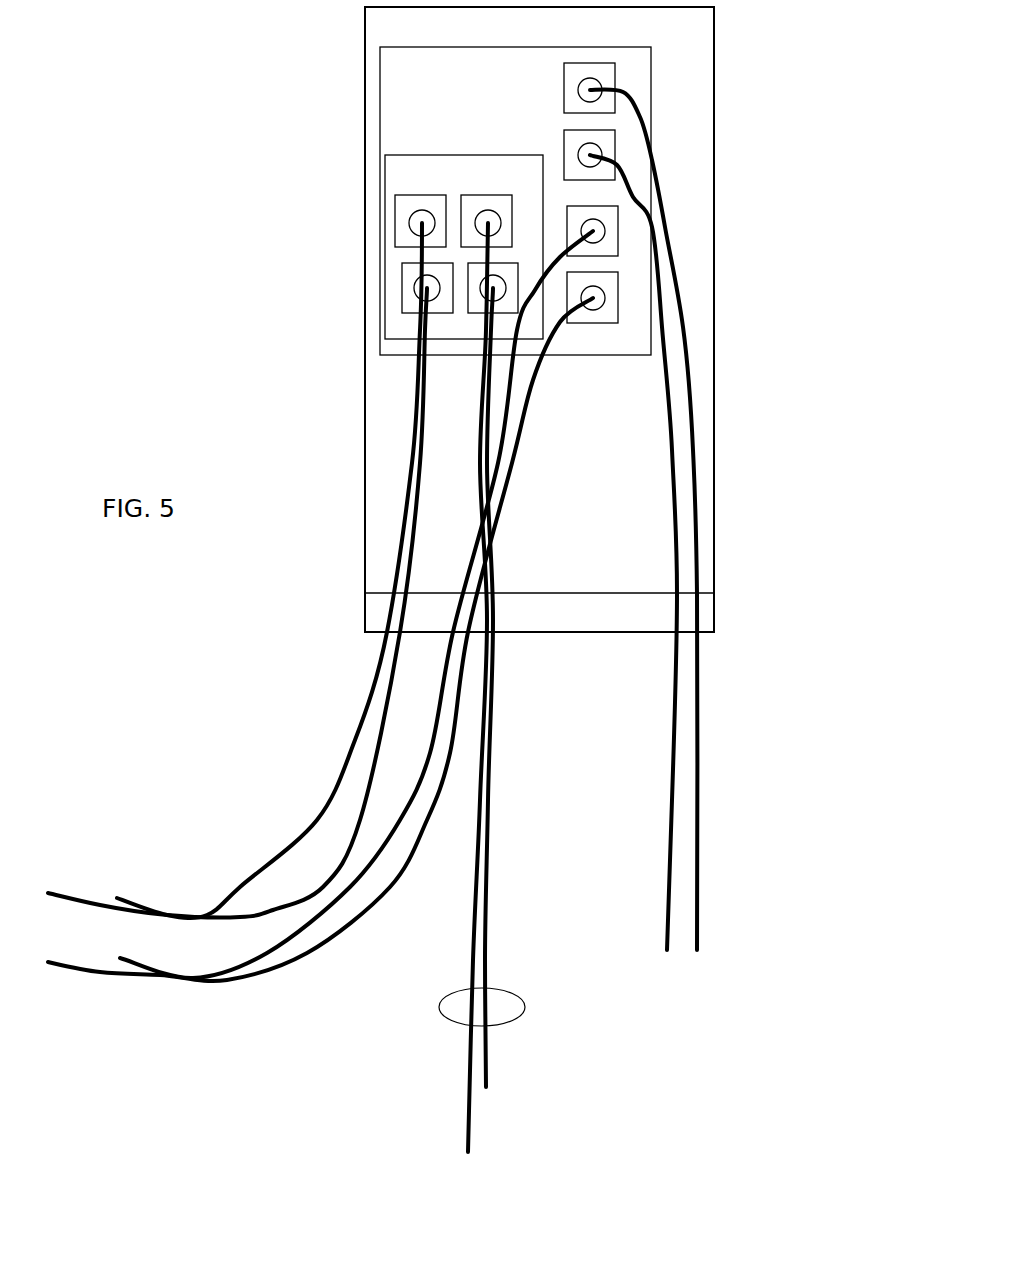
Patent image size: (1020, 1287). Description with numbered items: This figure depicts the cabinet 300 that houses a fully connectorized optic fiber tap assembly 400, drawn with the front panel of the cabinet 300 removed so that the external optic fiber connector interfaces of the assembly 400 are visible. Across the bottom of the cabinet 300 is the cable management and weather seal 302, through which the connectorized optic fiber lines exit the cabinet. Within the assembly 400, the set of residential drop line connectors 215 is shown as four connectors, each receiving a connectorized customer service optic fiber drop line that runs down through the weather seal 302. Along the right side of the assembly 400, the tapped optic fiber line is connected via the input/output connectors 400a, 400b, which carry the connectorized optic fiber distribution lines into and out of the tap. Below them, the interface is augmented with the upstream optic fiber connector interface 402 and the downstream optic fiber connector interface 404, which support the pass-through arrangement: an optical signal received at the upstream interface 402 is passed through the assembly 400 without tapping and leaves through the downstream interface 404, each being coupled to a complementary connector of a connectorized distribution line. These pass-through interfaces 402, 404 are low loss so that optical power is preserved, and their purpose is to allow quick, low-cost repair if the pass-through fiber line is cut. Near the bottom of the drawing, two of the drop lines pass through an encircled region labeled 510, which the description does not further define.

The cabinet 300 is at (363, 270).
The cable management and weather seal 302 is at (539, 609).
The fully connectorized optic fiber tap assembly 400 is at (515, 201).
The set of residential drop line connectors 215 is at (464, 247).
The output connector 400b is at (605, 82).
The input connector 400a is at (605, 138).
The upstream optic fiber connector interface 402 is at (610, 223).
The downstream optic fiber connector interface 404 is at (610, 282).
The cable bundle / tie region 510 is at (525, 1003).